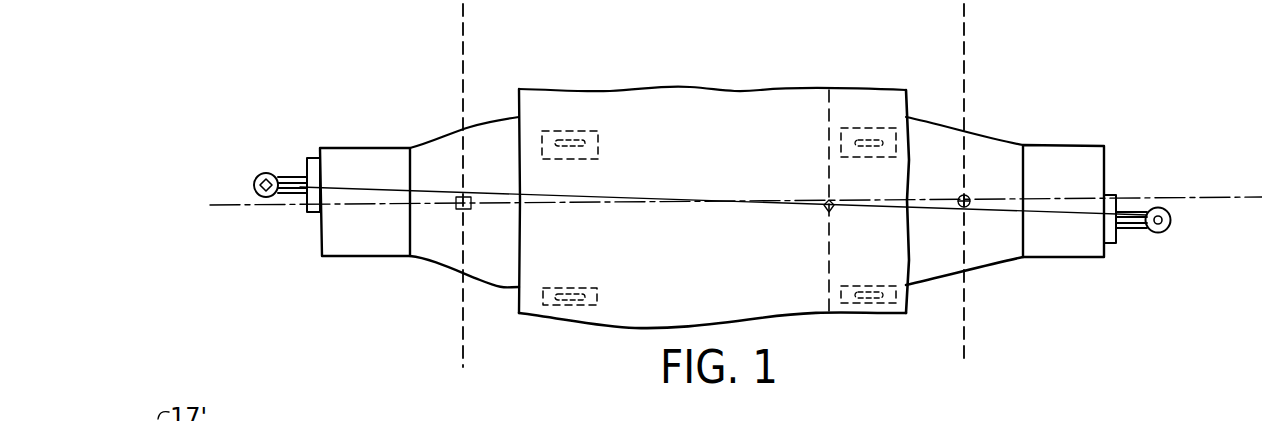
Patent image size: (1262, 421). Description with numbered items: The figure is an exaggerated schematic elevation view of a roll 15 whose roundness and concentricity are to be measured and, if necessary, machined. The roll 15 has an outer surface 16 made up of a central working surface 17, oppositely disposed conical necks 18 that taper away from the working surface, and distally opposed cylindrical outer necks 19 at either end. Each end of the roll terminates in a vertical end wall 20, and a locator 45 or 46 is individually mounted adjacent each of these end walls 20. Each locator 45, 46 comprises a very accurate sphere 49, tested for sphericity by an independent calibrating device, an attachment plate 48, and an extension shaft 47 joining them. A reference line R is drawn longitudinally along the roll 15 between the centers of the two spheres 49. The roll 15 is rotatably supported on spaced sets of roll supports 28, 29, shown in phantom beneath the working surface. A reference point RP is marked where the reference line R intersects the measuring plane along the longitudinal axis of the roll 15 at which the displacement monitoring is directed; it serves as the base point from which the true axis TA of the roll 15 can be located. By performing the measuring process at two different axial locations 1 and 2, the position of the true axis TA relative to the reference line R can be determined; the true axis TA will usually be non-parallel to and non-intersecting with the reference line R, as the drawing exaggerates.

The axial location 1 is at (461, 331).
The axial location 2 is at (962, 340).
The roll 15 is at (648, 55).
The outer surface 16 is at (731, 80).
The working surface 17 is at (848, 89).
The conical necks 18 is at (977, 134).
The outer necks 19 is at (1041, 145).
The vertical end walls 20 is at (323, 257).
The roll supports 28 is at (575, 306).
The roll supports 29 is at (553, 131).
The locator 45 is at (1168, 240).
The locator 46 is at (258, 160).
The extension shaft 47 is at (289, 176).
The attachment plate 48 is at (311, 157).
The sphere 49 is at (270, 197).
The true axis TA is at (1245, 185).
The reference line R is at (1031, 219).
The reference point RP is at (824, 208).